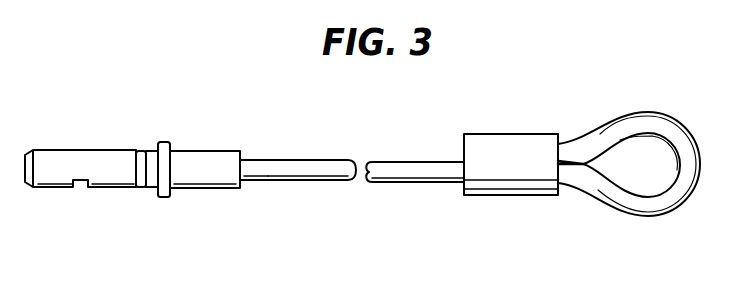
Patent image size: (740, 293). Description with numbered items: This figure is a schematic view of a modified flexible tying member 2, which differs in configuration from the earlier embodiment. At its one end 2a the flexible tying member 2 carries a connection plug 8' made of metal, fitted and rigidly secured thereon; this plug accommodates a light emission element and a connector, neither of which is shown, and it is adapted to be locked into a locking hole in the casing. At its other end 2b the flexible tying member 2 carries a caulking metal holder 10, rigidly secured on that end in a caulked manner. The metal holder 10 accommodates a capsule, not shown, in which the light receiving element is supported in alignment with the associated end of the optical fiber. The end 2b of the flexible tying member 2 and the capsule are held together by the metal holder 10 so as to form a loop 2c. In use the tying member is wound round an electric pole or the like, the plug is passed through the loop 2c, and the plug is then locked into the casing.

The connection plug 8' is at (132, 150).
The one end of the flexible tying member 2a is at (245, 173).
The flexible tying member 2 is at (293, 160).
The caulking metal holder 10 is at (513, 148).
The other end of the flexible tying member 2b is at (565, 152).
The loop 2c is at (650, 182).